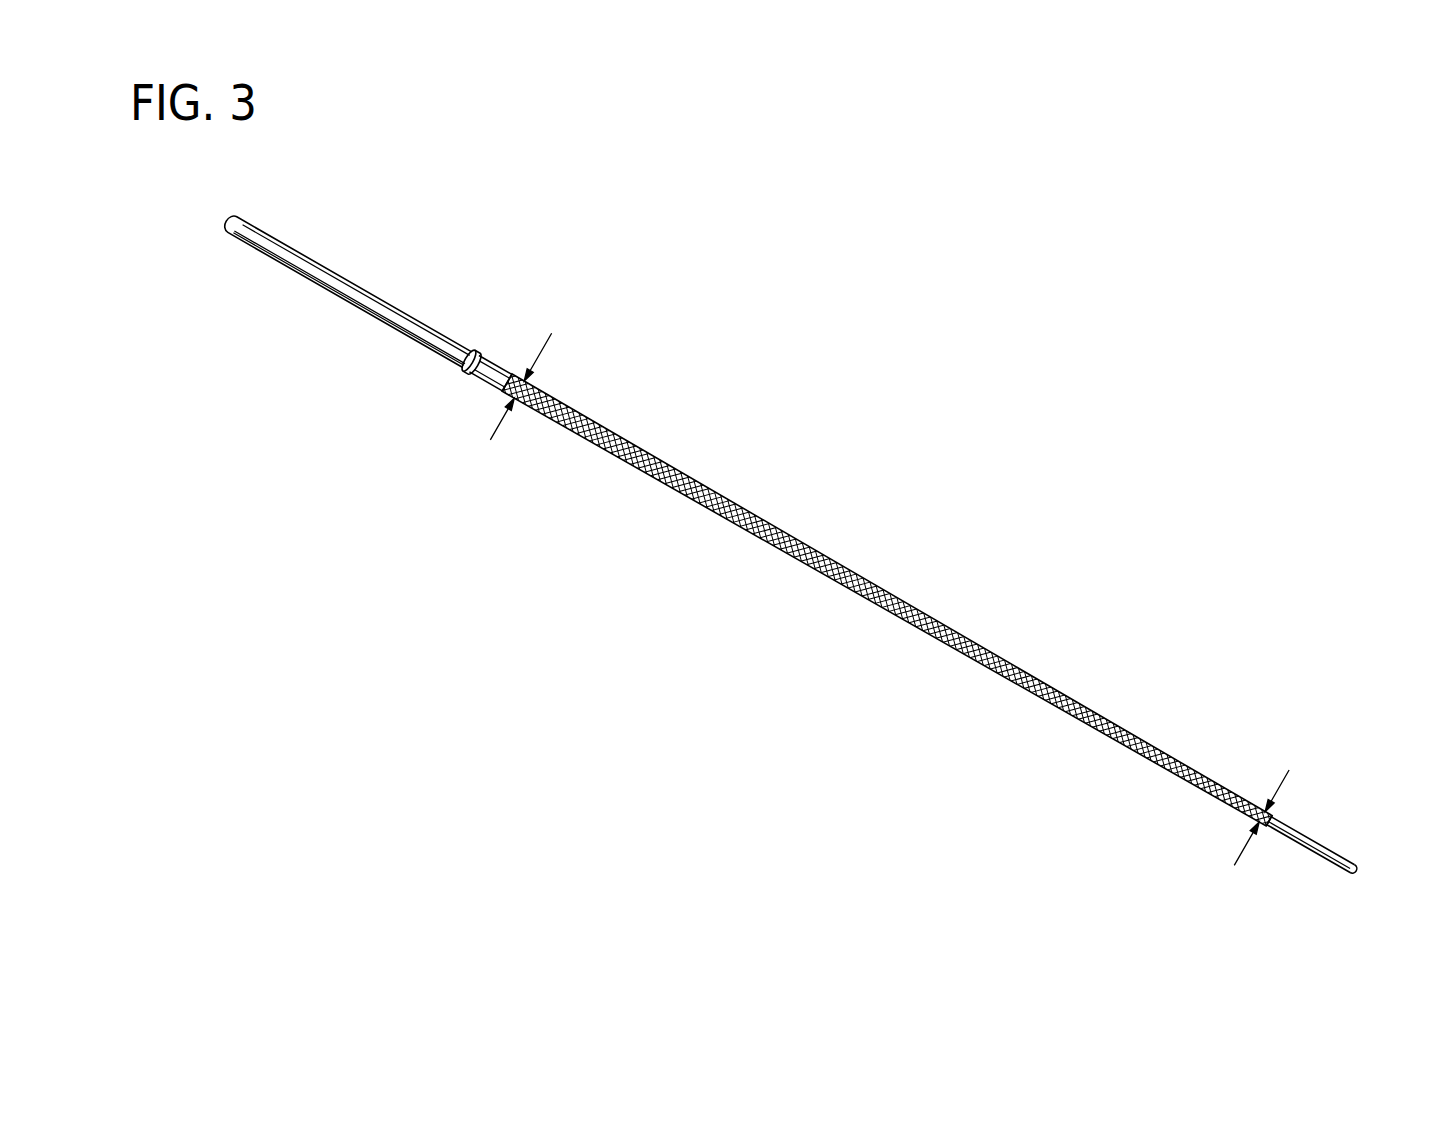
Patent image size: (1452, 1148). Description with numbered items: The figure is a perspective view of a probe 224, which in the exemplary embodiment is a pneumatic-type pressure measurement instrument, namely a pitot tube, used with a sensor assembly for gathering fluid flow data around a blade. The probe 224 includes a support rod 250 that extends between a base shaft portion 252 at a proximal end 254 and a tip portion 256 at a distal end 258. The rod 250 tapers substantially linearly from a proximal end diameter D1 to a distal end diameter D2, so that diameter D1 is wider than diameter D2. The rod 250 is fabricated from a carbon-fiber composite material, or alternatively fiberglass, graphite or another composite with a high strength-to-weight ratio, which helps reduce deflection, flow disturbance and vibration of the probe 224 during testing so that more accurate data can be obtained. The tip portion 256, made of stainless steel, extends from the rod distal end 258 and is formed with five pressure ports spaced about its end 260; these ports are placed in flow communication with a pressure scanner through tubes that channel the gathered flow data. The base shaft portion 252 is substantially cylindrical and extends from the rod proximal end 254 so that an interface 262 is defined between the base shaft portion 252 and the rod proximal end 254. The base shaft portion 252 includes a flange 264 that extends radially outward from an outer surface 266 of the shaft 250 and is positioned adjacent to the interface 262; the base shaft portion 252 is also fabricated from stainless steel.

The probe 224 is at (723, 483).
The support rod 250 is at (870, 600).
The base shaft portion 252 is at (364, 310).
The proximal end 254 is at (515, 363).
The tip portion 256 is at (1315, 852).
The distal end 258 is at (1286, 811).
The end 260 is at (1362, 874).
The interface 262 is at (496, 387).
The flange 264 is at (471, 349).
The outer surface 266 is at (300, 260).
The proximal end diameter D1 is at (513, 409).
The distal end diameter D2 is at (1250, 834).